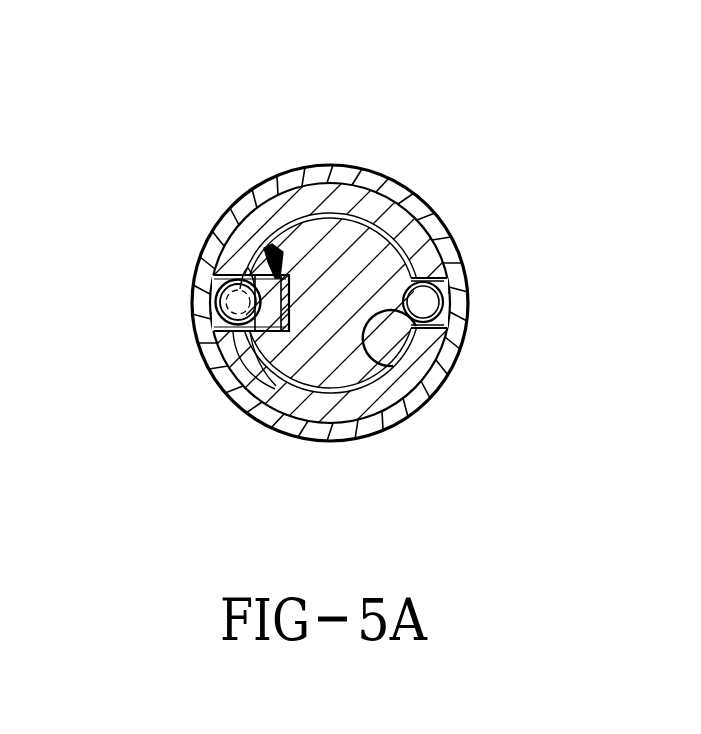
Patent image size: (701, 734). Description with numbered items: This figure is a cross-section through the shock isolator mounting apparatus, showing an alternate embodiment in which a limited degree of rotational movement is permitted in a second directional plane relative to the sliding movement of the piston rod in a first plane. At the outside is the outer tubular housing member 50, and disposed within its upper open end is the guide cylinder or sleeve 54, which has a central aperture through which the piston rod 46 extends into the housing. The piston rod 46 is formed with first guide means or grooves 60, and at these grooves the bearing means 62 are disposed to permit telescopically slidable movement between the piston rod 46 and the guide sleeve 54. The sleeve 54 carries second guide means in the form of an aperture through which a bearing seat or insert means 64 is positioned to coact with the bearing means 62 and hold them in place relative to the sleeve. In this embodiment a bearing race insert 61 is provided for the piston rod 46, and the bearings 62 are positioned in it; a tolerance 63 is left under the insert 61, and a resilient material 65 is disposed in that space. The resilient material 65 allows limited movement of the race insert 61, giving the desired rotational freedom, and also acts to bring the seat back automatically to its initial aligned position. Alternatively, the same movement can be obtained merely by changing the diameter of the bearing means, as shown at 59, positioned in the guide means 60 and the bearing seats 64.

The outer tubular housing member 50 is at (382, 187).
The guide cylinder or sleeve 54 is at (323, 198).
The piston rod 46 is at (345, 375).
The first guide means or grooves 60 is at (387, 352).
The bearing means 62 is at (428, 295).
The bearing seat or insert means 64 is at (220, 284).
The bearing means of changed diameter 59 is at (238, 308).
The bearing race insert 61 is at (262, 283).
The tolerance 63 is at (275, 250).
The resilient material 65 is at (288, 332).